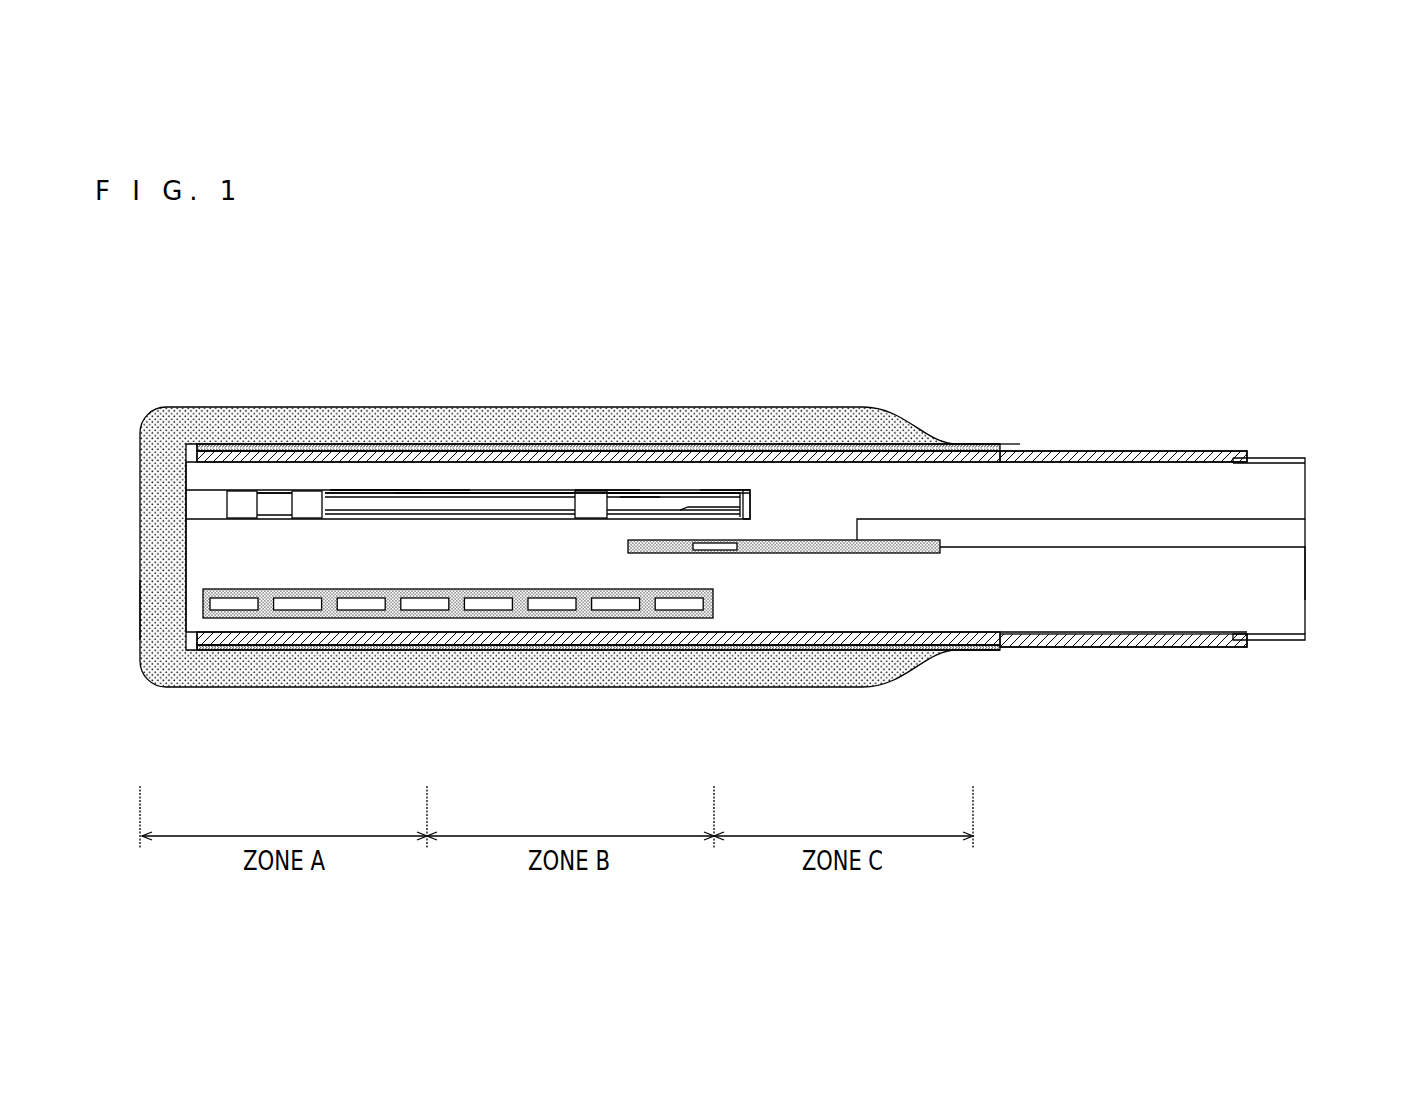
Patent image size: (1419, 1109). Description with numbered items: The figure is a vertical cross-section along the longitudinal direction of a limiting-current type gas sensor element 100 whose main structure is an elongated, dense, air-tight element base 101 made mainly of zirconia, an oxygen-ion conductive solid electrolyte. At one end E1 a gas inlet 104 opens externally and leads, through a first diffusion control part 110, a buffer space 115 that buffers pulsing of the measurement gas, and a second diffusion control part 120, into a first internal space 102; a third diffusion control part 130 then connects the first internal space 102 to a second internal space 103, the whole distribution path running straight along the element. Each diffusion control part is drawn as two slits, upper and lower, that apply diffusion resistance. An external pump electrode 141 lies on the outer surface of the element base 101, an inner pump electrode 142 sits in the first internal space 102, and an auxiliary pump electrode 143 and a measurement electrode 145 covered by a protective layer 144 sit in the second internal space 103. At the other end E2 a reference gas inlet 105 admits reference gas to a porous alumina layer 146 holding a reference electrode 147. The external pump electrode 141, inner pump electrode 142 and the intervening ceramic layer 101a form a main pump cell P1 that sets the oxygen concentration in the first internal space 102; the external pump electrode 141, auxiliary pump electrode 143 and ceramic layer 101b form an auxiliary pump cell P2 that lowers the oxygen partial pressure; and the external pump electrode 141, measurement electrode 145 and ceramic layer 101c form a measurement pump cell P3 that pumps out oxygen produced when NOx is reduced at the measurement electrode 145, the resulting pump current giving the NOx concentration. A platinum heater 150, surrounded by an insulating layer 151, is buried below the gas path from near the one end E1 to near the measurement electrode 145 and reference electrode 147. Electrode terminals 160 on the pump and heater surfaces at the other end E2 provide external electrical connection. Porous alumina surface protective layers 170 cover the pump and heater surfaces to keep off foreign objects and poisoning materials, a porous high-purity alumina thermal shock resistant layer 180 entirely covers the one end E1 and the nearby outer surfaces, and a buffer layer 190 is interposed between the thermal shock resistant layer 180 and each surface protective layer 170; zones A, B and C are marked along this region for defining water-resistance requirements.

The sensor element 100 is at (1083, 301).
The element base 101 is at (1021, 480).
The ceramic layer 101a is at (361, 479).
The ceramic layer 101b is at (626, 491).
The ceramic layer 101c is at (731, 479).
The first internal space 102 is at (486, 491).
The second internal space 103 is at (660, 491).
The gas inlet 104 is at (194, 500).
The reference gas inlet 105 is at (1305, 534).
The first diffusion control part 110 is at (224, 511).
The buffer space 115 is at (262, 510).
The second diffusion control part 120 is at (290, 509).
The third diffusion control part 130 is at (571, 491).
The external pump electrode 141 is at (450, 492).
The inner pump electrode 142 is at (410, 491).
The auxiliary pump electrode 143 is at (642, 498).
The protective layer 144 is at (700, 491).
The measurement electrode 145 is at (747, 525).
The porous alumina layer 146 is at (650, 553).
The reference electrode 147 is at (723, 553).
The heater 150 is at (458, 638).
The insulating layer 151 is at (333, 599).
The electrode terminals 160 is at (1270, 458).
The surface protective layers 170 is at (1110, 451).
The thermal shock resistant layer 180 is at (240, 407).
The buffer layer 190 is at (296, 452).
The main pump cell P1 is at (446, 345).
The auxiliary pump cell P2 is at (622, 328).
The measurement pump cell P3 is at (808, 338).
The one end E1 is at (139, 606).
The other end E2 is at (1335, 558).